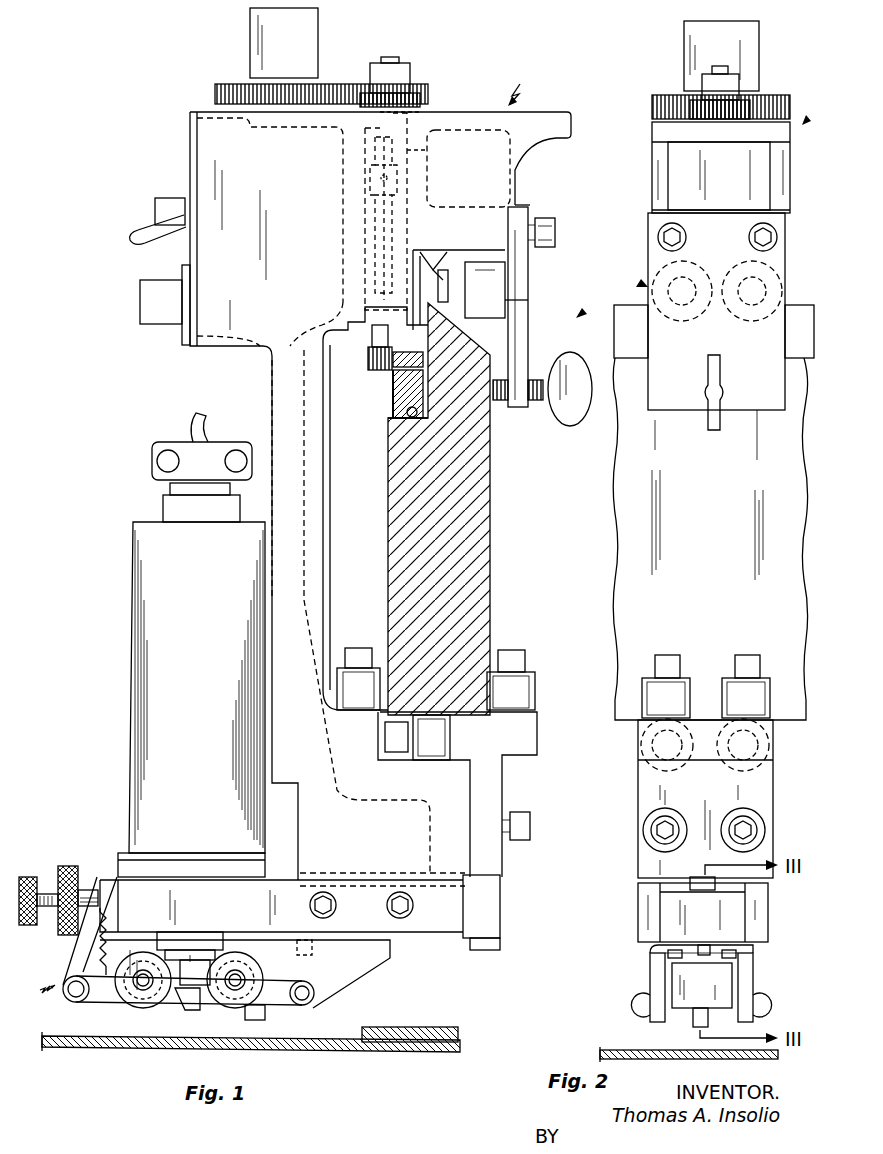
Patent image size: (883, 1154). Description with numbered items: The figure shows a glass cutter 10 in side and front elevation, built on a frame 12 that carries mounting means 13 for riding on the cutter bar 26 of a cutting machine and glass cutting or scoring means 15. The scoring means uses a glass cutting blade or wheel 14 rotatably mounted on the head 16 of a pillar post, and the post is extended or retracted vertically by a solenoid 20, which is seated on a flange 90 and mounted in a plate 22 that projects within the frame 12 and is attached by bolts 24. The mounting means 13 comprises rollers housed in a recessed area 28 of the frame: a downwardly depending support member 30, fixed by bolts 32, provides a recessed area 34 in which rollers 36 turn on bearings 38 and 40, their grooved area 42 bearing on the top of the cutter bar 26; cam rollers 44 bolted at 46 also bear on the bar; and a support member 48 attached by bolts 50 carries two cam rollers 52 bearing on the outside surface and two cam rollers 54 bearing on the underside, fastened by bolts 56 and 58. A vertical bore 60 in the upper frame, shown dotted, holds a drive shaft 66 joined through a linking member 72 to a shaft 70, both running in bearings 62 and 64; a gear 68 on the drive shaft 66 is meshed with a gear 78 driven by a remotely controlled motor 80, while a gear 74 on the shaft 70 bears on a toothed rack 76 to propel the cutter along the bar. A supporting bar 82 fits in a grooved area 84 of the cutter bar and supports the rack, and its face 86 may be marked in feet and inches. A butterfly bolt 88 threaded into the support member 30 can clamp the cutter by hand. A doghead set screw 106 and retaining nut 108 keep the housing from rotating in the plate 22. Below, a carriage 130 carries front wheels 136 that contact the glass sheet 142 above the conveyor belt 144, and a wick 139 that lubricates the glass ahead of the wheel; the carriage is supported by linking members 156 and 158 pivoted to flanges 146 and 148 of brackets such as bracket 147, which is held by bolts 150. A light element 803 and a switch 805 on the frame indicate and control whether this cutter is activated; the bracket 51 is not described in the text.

In FIG. 1, the glass cutter 10 is at (549, 94).
In FIG. 2, the glass cutter 10 is at (805, 122).
In FIG. 1, the frame 12 is at (198, 138).
In FIG. 2, the frame 12 is at (790, 170).
In FIG. 1, the mounting means 13 is at (580, 316).
In FIG. 2, the mounting means 13 is at (645, 285).
In FIG. 1, the glass cutting blade or wheel 14 is at (180, 1010).
In FIG. 1, the glass cutting or scoring means 15 is at (36, 1003).
In FIG. 1, the head 16 is at (198, 1008).
In FIG. 1, the solenoid 20 is at (133, 556).
In FIG. 1, the plate 22 is at (125, 885).
In FIG. 2, the plate 22 is at (670, 916).
In FIG. 1, the bolts 24 is at (408, 915).
In FIG. 1, the cutter bar 26 is at (490, 520).
In FIG. 2, the cutter bar 26 is at (615, 530).
In FIG. 1, the recessed area 28 is at (358, 500).
In FIG. 1, the downwardly depending support member 30 is at (525, 325).
In FIG. 2, the downwardly depending support member 30 is at (785, 270).
In FIG. 1, the bolts 32 is at (550, 218).
In FIG. 2, the bolts 32 is at (658, 232).
In FIG. 1, the recessed area 34 is at (447, 280).
In FIG. 1, the rollers 36 is at (495, 272).
In FIG. 2, the rollers 36 is at (735, 320).
In FIG. 1, the bearings 38 is at (528, 300).
In FIG. 1, the bearings 40 is at (418, 260).
In FIG. 1, the grooved area 42 is at (440, 262).
In FIG. 1, the cam rollers 44 is at (334, 670).
In FIG. 1, the bolts 46 is at (362, 648).
In FIG. 1, the support member 48 is at (500, 783).
In FIG. 2, the support member 48 is at (640, 778).
In FIG. 1, the bolts 50 is at (530, 822).
In FIG. 2, the bolts 50 is at (655, 815).
In FIG. 1, the bracket 51 is at (495, 945).
In FIG. 2, the bracket 51 is at (745, 958).
In FIG. 1, the cam rollers 52 is at (535, 690).
In FIG. 2, the cam rollers 52 is at (722, 700).
In FIG. 1, the cam rollers 54 is at (428, 760).
In FIG. 2, the cam rollers 54 is at (675, 772).
In FIG. 1, the bolts 56 is at (515, 650).
In FIG. 2, the bolts 56 is at (745, 655).
In FIG. 1, the bolts 58 is at (385, 740).
In FIG. 1, the vertical bore 60 is at (458, 168).
In FIG. 1, the bearings 62 is at (340, 305).
In FIG. 1, the bearings 64 is at (422, 112).
In FIG. 1, the drive shaft 66 is at (388, 60).
In FIG. 2, the drive shaft 66 is at (730, 73).
In FIG. 1, the gear 68 is at (420, 95).
In FIG. 2, the gear 68 is at (690, 108).
In FIG. 1, the shaft 70 is at (375, 218).
In FIG. 1, the linking member 72 is at (370, 163).
In FIG. 1, the gear 74 is at (368, 362).
In FIG. 1, the toothed rack 76 is at (423, 360).
In FIG. 1, the gear 78 is at (212, 86).
In FIG. 2, the gear 78 is at (652, 105).
In FIG. 1, the remotely controlled motor 80 is at (252, 32).
In FIG. 2, the remotely controlled motor 80 is at (684, 46).
In FIG. 1, the supporting bar 82 is at (423, 398).
In FIG. 1, the grooved area 84 is at (418, 418).
In FIG. 1, the face 86 is at (393, 398).
In FIG. 1, the butterfly bolt 88 is at (570, 426).
In FIG. 2, the butterfly bolt 88 is at (722, 432).
In FIG. 1, the flange 90 is at (180, 868).
In FIG. 1, the doghead set screw 106 is at (40, 875).
In FIG. 1, the retaining nut 108 is at (68, 865).
In FIG. 1, the carriage 130 is at (290, 958).
In FIG. 2, the carriage 130 is at (722, 978).
In FIG. 1, the front wheels 136 is at (128, 1003).
In FIG. 2, the front wheels 136 is at (640, 998).
In FIG. 1, the wick 139 is at (258, 1018).
In FIG. 2, the wick 139 is at (695, 1027).
In FIG. 1, the glass sheet 142 is at (455, 1010).
In FIG. 1, the conveyor belt 144 is at (398, 1052).
In FIG. 2, the conveyor belt 144 is at (608, 1050).
In FIG. 1, the flange 146 is at (380, 965).
In FIG. 2, the bracket 147 is at (650, 950).
In FIG. 1, the flange 148 is at (60, 957).
In FIG. 2, the bolts 150 is at (655, 962).
In FIG. 1, the linking member 156 is at (105, 1003).
In FIG. 1, the linking member 158 is at (275, 1005).
In FIG. 1, the light element 803 is at (140, 300).
In FIG. 1, the switch 805 is at (130, 237).